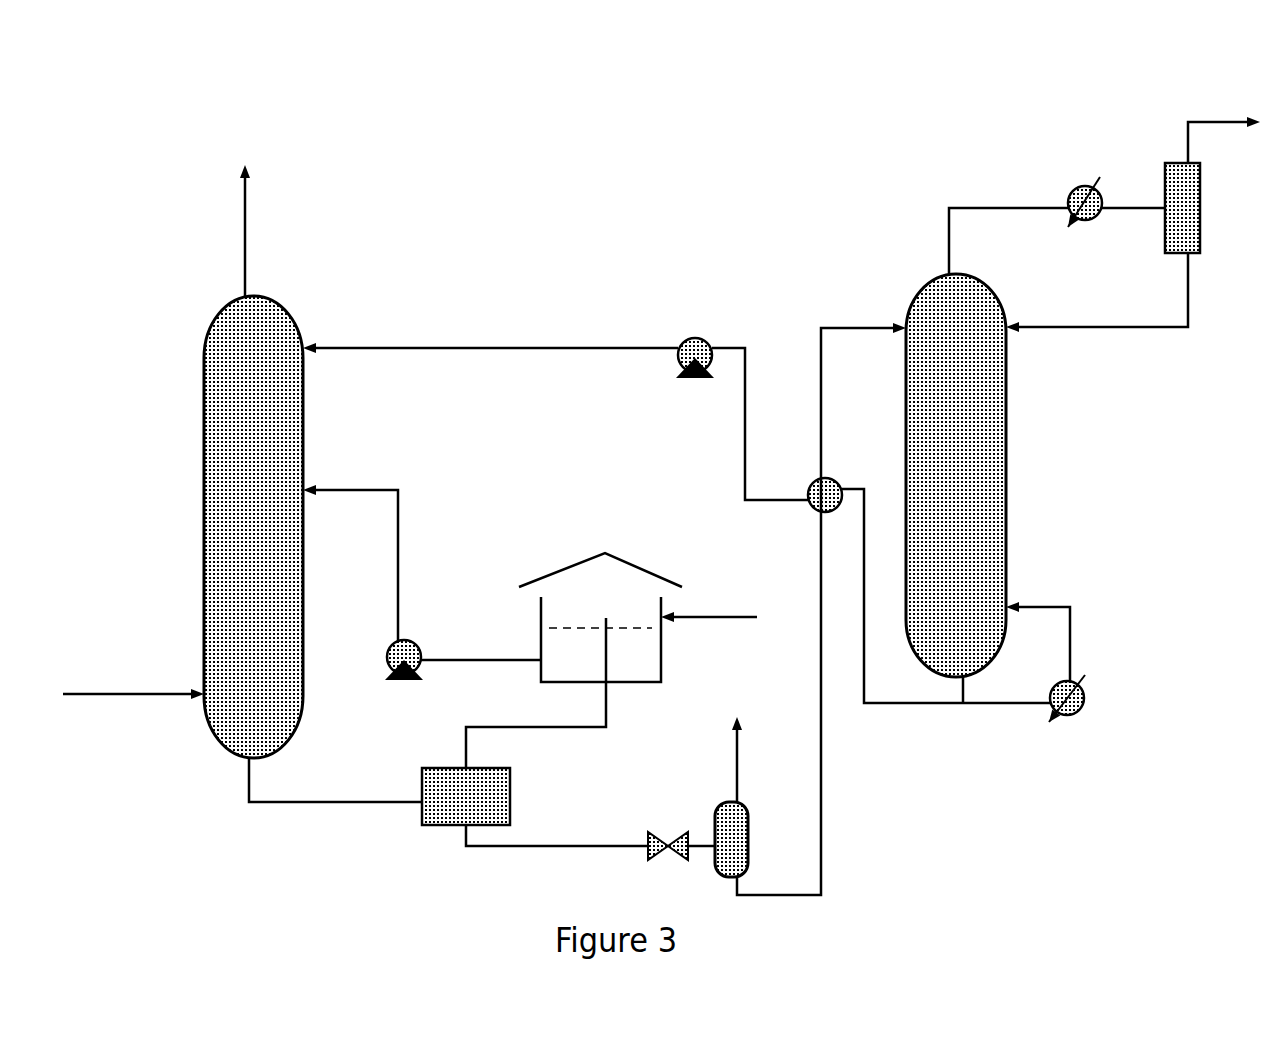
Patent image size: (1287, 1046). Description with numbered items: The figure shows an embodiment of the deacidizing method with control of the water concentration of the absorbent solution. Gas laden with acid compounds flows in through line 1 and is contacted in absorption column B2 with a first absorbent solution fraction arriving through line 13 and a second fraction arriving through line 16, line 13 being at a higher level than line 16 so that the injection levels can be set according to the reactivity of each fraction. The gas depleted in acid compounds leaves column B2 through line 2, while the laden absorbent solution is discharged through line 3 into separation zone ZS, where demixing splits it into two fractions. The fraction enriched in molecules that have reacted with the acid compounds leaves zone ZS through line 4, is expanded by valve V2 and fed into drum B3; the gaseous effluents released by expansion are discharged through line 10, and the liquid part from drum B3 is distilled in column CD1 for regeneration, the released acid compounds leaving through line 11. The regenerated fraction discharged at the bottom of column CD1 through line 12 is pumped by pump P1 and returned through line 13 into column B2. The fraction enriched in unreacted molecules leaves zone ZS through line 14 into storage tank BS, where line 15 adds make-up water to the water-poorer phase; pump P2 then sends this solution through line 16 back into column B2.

The line 1 is at (140, 692).
The line 2 is at (247, 263).
The line 3 is at (260, 803).
The stream from ZS to valve V2 4 is at (547, 843).
The line 10 is at (738, 782).
The line 11 is at (1230, 120).
The line 12 is at (742, 470).
The line 13 is at (428, 348).
The line 14 is at (536, 693).
The line 15 is at (702, 613).
The line 16 is at (335, 488).
The absorption column B2 is at (253, 527).
The drum B3 is at (740, 839).
The storage tank BS is at (600, 617).
The distillation column CD1 is at (956, 475).
The pump P1 is at (693, 341).
The pump P2 is at (414, 644).
The valve V2 is at (671, 831).
The separation zone ZS is at (466, 796).